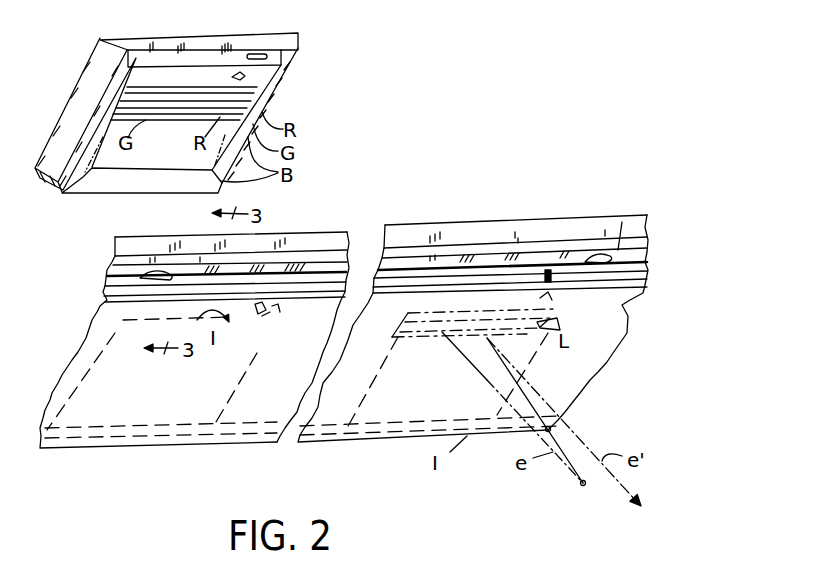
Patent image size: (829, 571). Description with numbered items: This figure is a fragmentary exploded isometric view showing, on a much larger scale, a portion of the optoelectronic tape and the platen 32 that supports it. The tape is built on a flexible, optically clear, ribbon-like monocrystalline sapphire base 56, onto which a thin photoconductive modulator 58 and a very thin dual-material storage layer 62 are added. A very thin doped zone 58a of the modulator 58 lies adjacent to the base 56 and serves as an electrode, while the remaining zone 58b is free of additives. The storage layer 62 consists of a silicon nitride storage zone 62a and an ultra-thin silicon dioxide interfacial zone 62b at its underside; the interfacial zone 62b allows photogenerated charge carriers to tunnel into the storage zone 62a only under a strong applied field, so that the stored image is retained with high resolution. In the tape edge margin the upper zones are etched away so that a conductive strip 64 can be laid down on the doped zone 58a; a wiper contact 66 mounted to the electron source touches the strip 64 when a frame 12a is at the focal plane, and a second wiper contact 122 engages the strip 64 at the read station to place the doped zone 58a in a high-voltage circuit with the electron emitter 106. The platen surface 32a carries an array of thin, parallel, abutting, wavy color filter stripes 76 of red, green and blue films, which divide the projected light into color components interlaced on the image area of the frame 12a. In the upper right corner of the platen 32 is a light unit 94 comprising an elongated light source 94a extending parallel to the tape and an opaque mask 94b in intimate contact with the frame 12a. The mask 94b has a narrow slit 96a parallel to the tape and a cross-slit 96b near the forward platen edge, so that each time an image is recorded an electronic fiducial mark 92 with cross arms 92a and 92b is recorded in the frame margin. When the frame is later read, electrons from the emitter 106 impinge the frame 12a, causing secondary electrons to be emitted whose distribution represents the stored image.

The platen 32 is at (140, 45).
The platen surface 32a is at (270, 70).
The light unit 94 is at (253, 48).
The light source 94a is at (308, 30).
The opaque mask 94b is at (228, 76).
The color filter stripes 76 is at (125, 97).
The slit 96a is at (252, 81).
The cross-slit 96b is at (255, 96).
The tape frame 12a is at (138, 454).
The wiper contact 122 is at (107, 280).
The electronic fiducial mark 92 is at (263, 306).
The cross arm 92a is at (321, 321).
The cross arm 92b is at (313, 353).
The conductive strip 64 is at (447, 268).
The base 56 is at (642, 222).
The modulator 58 is at (720, 228).
The doped zone 58a is at (713, 248).
The zone 58b is at (713, 278).
The dual-material storage layer 62 is at (715, 290).
The storage zone 62a is at (688, 329).
The interfacial zone 62b is at (708, 306).
The wiper contact 66 is at (585, 285).
The electron emitter 106 is at (582, 485).